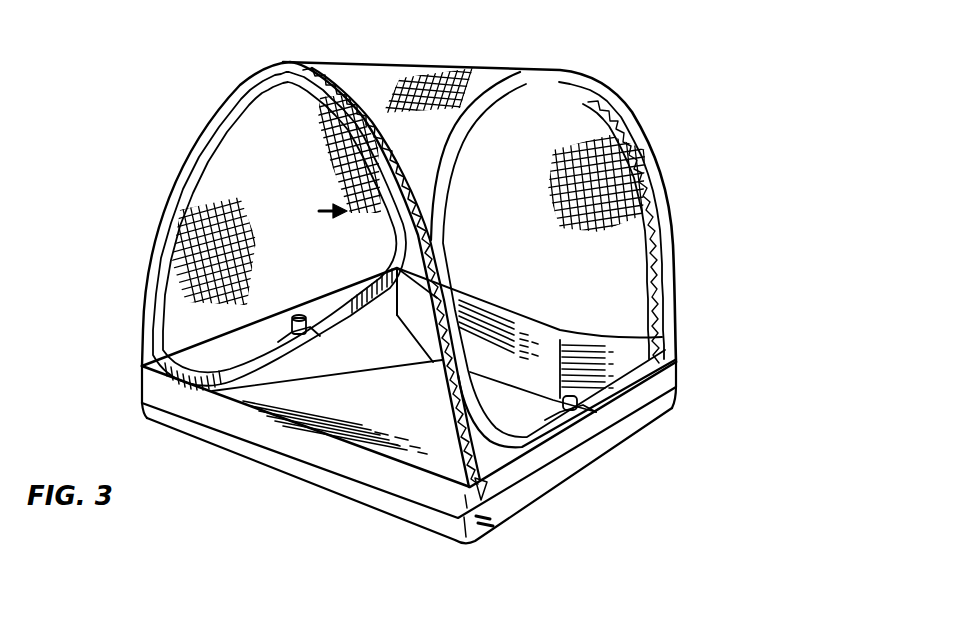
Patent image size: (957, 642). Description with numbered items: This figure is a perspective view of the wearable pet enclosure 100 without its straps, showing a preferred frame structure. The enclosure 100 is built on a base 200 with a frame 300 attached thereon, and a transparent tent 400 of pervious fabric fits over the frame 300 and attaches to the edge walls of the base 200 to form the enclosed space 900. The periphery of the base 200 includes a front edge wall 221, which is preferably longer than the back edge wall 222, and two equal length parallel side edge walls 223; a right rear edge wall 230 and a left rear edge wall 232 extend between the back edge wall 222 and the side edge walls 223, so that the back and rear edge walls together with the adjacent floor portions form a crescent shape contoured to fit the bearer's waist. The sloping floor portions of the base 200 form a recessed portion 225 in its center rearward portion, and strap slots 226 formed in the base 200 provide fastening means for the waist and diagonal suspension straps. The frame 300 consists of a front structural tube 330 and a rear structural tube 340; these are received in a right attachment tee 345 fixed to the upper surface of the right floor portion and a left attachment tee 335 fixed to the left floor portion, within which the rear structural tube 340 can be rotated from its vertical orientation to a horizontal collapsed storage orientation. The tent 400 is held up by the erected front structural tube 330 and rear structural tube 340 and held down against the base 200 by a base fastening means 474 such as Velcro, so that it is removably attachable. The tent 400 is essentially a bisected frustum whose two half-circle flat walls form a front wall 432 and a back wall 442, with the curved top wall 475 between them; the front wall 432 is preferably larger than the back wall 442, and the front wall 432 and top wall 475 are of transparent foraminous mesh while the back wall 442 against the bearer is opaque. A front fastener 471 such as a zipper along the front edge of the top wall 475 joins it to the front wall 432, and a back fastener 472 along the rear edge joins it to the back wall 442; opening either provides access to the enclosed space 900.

The enclosure 100 is at (158, 79).
The base 200 is at (567, 485).
The front edge wall 221 is at (320, 477).
The back edge wall 222 is at (523, 348).
The side edge walls 223 is at (337, 302).
The recessed portion 225 is at (428, 408).
The strap slots 226 is at (493, 518).
The right rear edge wall 230 is at (450, 282).
The left rear edge wall 232 is at (603, 357).
The frame 300 is at (617, 382).
The front structural tube 330 is at (167, 223).
The left attachment tee 335 is at (556, 404).
The rear structural tube 340 is at (513, 73).
The right attachment tee 345 is at (290, 330).
The tent 400 is at (630, 140).
The front wall 432 is at (217, 317).
The back wall 442 is at (647, 155).
The front fastener 471 is at (358, 90).
The back fastener 472 is at (603, 97).
The base fastening means 474 is at (407, 479).
The top wall 475 is at (450, 72).
The enclosed space 900 is at (309, 211).